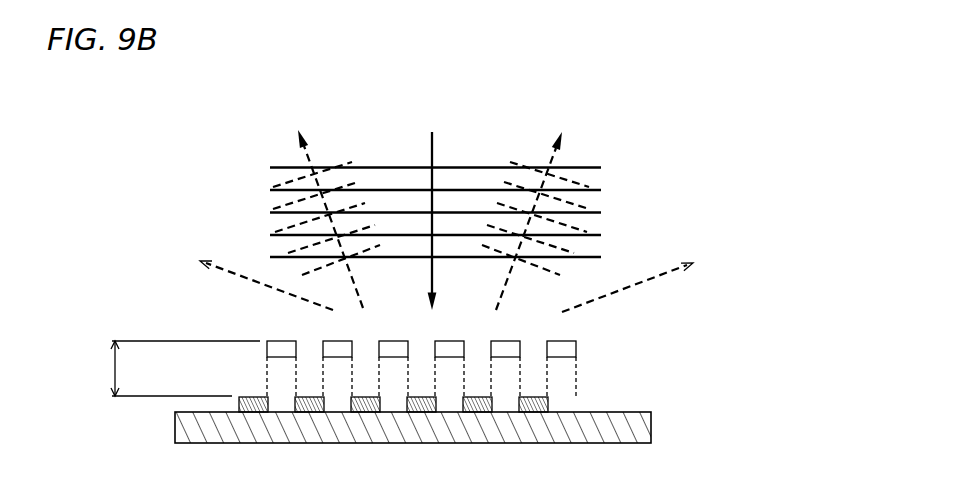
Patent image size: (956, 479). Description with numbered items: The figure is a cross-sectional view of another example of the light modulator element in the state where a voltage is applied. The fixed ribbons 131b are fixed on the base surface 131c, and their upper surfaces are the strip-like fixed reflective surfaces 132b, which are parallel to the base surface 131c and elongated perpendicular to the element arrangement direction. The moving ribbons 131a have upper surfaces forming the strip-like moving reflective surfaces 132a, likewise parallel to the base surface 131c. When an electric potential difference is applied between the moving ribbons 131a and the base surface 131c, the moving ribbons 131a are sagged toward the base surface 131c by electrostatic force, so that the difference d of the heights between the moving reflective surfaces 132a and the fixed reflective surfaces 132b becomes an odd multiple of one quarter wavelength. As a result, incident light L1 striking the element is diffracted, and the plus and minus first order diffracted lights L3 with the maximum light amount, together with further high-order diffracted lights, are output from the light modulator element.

The incident light L1 is at (432, 153).
The first order diffracted lights L3 is at (310, 157).
The moving ribbons 131a is at (432, 310).
The fixed ribbons 131b is at (408, 355).
The base surface 131c is at (622, 413).
The moving reflective surfaces 132a is at (280, 337).
The fixed reflective surfaces 132b is at (250, 390).
The difference of the heights d is at (178, 368).